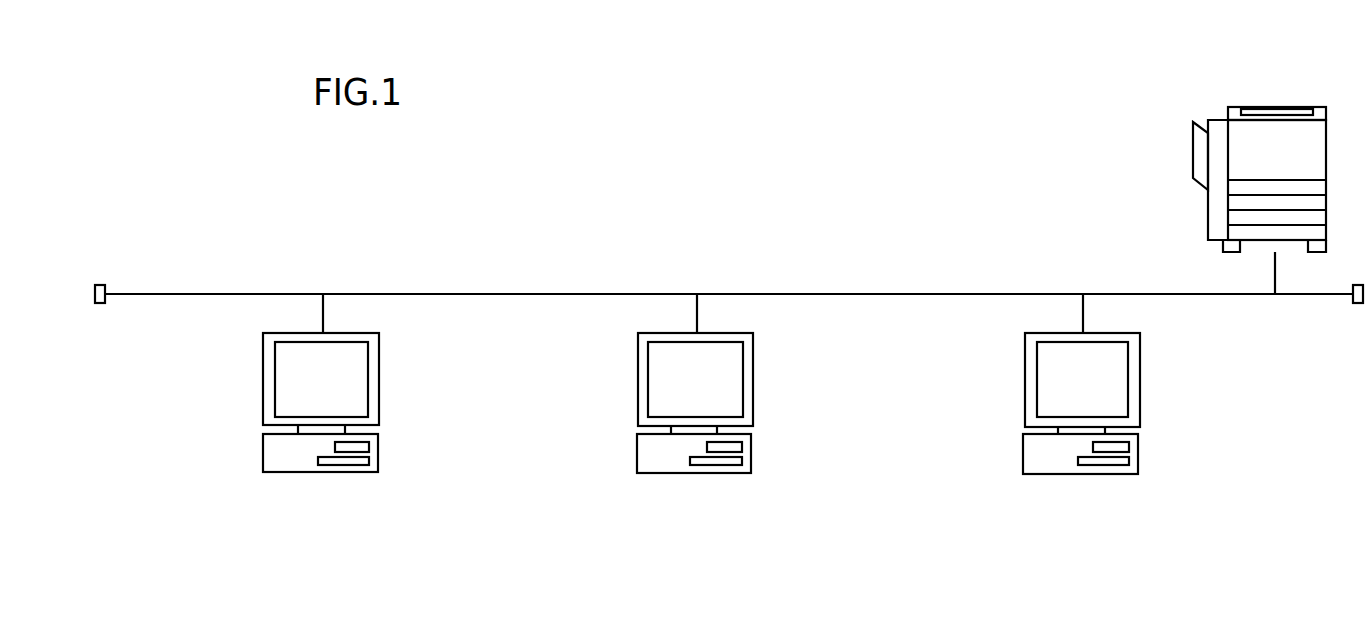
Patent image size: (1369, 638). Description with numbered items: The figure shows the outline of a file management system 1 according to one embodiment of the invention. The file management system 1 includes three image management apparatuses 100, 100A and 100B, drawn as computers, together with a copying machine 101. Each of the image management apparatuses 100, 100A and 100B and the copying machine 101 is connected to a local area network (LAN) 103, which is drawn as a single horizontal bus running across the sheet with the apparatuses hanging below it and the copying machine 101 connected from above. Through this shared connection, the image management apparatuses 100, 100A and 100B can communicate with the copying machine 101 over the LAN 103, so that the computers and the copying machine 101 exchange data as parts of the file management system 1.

The file management system 1 is at (1105, 66).
The image management apparatus 100 is at (1055, 474).
The image management apparatus 100A is at (667, 473).
The image management apparatus 100B is at (293, 472).
The copying machine 101 is at (1283, 102).
The local area network (LAN) 103 is at (608, 295).